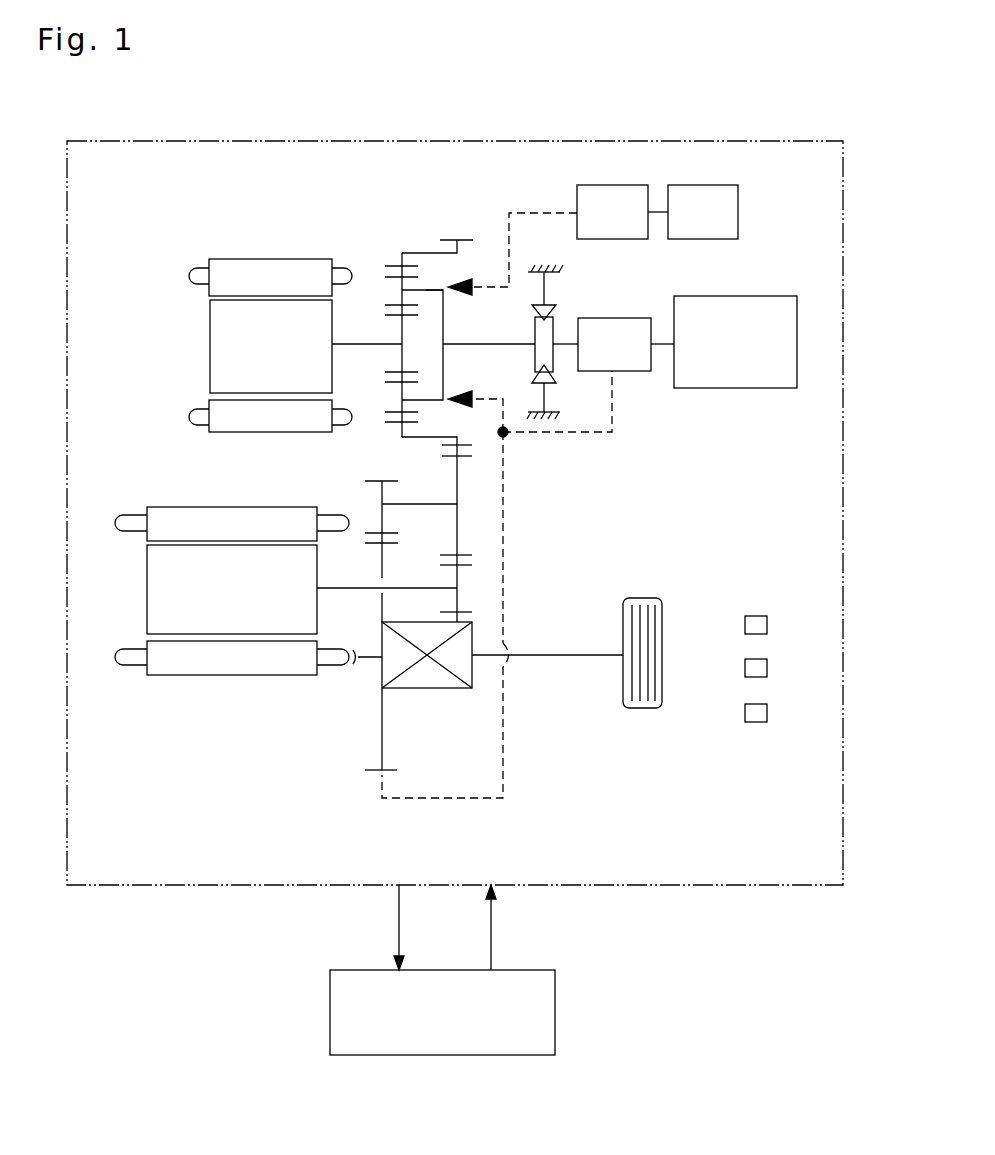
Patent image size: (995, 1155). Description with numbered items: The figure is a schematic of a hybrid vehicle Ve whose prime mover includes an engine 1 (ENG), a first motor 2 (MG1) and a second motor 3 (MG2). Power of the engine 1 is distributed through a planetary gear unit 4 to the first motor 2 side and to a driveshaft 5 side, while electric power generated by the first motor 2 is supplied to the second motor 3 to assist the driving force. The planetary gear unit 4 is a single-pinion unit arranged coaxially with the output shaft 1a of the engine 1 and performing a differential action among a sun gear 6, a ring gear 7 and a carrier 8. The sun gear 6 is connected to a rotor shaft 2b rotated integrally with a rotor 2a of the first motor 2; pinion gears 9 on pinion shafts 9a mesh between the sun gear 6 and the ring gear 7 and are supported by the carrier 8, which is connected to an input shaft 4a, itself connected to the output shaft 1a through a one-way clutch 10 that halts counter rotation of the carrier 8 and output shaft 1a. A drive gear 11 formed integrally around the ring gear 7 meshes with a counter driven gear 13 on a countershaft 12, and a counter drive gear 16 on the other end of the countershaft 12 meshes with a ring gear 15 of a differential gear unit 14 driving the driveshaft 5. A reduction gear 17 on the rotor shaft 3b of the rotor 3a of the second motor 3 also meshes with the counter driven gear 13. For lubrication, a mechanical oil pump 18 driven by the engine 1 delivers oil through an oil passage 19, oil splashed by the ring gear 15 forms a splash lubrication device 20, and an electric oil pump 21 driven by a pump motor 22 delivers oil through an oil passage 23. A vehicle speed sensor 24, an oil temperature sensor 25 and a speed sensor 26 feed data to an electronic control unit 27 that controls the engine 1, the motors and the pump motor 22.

The vehicle Ve is at (620, 140).
The engine 1 is at (740, 388).
The output shaft 1a is at (664, 343).
The first motor 2 is at (182, 263).
The rotor 2a is at (210, 353).
The rotor shaft 2b is at (356, 347).
The second motor 3 is at (130, 493).
The rotor 3a is at (147, 592).
The rotor shaft 3b is at (350, 588).
The planetary gear unit 4 is at (406, 242).
The input shaft 4a is at (485, 344).
The driveshaft 5 is at (553, 655).
The sun gear 6 is at (385, 312).
The ring gear 7 is at (385, 420).
The carrier 8 is at (443, 368).
The pinion gears 9 is at (385, 275).
The pinion shafts 9a is at (430, 290).
The one-way clutch 10 is at (570, 298).
The drive gear 11 is at (462, 240).
The countershaft 12 is at (425, 504).
The counter driven gear 13 is at (440, 555).
The differential gear unit 14 is at (437, 697).
The ring gear 15 is at (370, 775).
The counter drive gear 16 is at (375, 481).
The reduction gear 17 is at (440, 612).
The mechanical oil pump 18 is at (627, 371).
The oil passage 19 is at (600, 432).
The splash lubrication device 20 is at (522, 563).
The electric oil pump 21 is at (632, 240).
The pump motor 22 is at (723, 240).
The oil passage 23 is at (509, 240).
The vehicle speed sensor 24 is at (767, 625).
The oil temperature sensor 25 is at (767, 668).
The speed sensor 26 is at (767, 713).
The electronic control unit 27 is at (555, 1007).